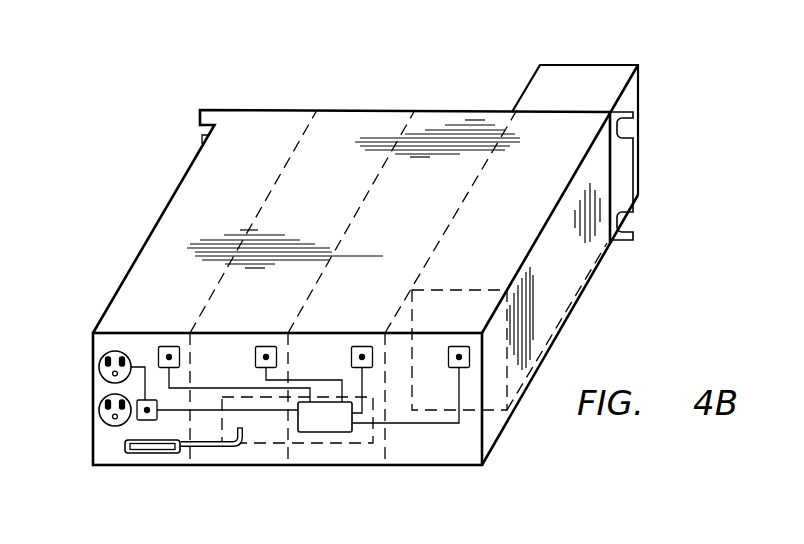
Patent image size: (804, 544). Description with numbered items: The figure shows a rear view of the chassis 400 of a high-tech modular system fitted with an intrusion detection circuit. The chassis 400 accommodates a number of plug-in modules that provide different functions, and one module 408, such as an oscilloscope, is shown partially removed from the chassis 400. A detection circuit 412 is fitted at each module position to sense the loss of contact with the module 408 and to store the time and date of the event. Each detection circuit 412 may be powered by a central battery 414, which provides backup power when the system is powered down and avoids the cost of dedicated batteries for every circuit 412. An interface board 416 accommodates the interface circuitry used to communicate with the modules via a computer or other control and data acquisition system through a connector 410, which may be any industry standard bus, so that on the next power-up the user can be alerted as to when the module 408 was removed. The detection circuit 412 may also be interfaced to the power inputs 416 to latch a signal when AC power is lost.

The chassis 400 is at (157, 225).
The module 408 is at (583, 65).
The detection circuit 412 is at (168, 346).
The central battery 414 is at (325, 432).
The interface board 416 is at (98, 403).
The connector 410 is at (155, 455).